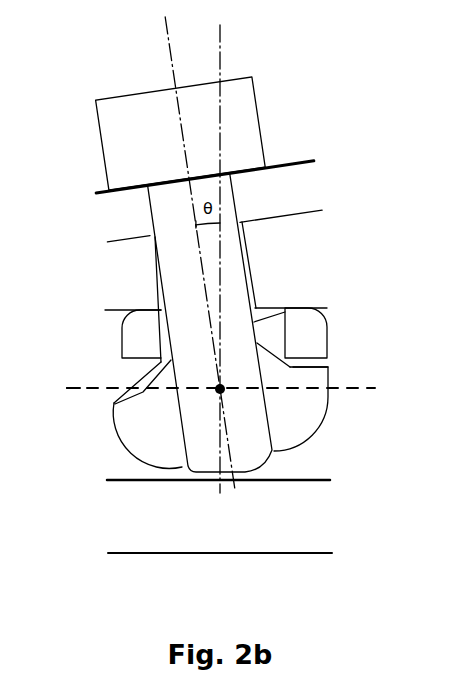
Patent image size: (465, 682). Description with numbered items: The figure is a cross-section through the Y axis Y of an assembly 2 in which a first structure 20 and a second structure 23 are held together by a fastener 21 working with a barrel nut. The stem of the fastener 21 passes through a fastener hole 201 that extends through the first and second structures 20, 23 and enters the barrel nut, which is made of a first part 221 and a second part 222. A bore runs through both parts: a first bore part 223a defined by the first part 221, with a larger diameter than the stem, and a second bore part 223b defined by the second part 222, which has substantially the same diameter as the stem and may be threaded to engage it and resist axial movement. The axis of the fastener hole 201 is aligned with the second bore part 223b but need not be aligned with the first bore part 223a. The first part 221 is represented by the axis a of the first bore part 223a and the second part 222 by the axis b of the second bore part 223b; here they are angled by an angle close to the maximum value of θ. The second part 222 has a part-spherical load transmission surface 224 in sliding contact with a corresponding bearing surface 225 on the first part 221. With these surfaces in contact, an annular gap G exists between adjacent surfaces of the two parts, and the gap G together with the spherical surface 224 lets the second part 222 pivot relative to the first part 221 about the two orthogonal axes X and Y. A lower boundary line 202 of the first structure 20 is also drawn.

The assembly 2 is at (186, 245).
The fastener 21 is at (245, 143).
The fastener hole 201 is at (157, 273).
The second structure 23 is at (284, 202).
The first structure 20 is at (295, 273).
The lower surface line of component 202 is at (300, 483).
The first part 221 is at (305, 332).
The second part 222 is at (160, 447).
The first bore part 223a is at (287, 327).
The second bore part 223b is at (268, 403).
The load transmission surface 224 is at (157, 372).
The bearing surface 225 is at (330, 367).
The axis of the first bore part a is at (220, 52).
The axis of the second bore part b is at (170, 52).
The annular gap G is at (125, 377).
The X axis X is at (222, 391).
The Y axis Y is at (88, 392).